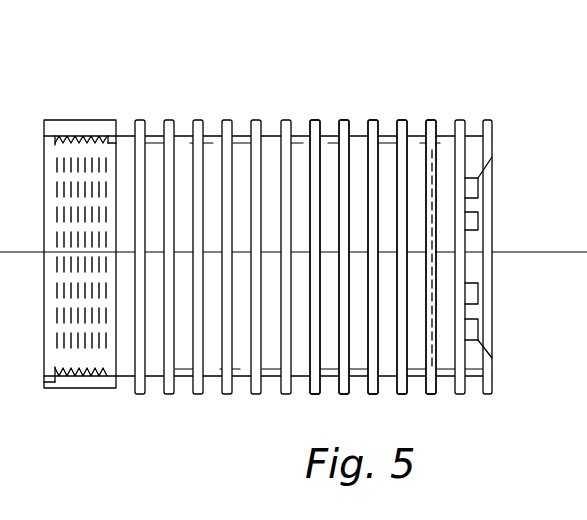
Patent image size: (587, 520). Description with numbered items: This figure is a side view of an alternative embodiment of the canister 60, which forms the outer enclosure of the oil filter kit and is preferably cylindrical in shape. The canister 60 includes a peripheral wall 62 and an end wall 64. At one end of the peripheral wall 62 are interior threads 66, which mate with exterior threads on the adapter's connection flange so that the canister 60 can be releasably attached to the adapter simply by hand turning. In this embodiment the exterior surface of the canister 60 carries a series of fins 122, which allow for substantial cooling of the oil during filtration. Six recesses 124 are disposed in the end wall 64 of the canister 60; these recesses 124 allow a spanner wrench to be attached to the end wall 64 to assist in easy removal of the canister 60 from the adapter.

The canister 60 is at (250, 90).
The peripheral wall 62 is at (274, 124).
The end wall 64 is at (494, 150).
The interior threads 66 is at (85, 141).
The fins 122 is at (315, 120).
The recesses 124 is at (472, 330).